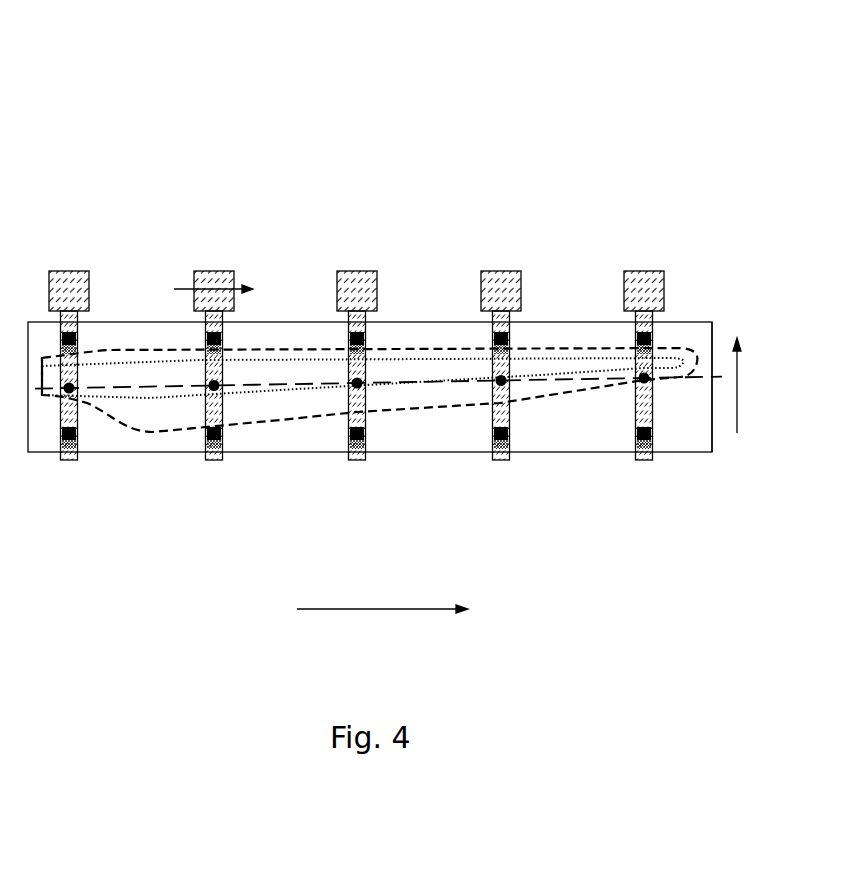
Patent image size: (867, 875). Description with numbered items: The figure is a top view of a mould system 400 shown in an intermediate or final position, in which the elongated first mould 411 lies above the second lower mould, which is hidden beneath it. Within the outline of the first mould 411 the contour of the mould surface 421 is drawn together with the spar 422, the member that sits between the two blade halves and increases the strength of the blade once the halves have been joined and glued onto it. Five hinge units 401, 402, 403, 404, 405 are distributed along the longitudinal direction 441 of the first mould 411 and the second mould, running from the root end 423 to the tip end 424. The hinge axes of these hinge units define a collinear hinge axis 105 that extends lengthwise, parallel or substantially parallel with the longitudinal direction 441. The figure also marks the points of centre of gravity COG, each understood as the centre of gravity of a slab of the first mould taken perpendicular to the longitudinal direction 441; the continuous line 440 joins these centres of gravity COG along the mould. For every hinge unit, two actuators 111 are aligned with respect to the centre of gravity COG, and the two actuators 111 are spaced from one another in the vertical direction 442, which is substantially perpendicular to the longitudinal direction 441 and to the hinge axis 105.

The mould system 400 is at (175, 56).
The hinge unit 401 is at (67, 270).
The hinge unit 402 is at (207, 270).
The hinge unit 403 is at (348, 267).
The hinge unit 404 is at (492, 265).
The hinge unit 405 is at (634, 265).
The hinge axis 105 is at (246, 283).
The actuators 111 is at (365, 343).
The first mould 411 is at (132, 453).
The mould surface 421 is at (450, 405).
The spar 422 is at (565, 373).
The root end 423 is at (40, 402).
The tip end 424 is at (689, 387).
The continuous line 440 is at (97, 387).
The longitudinal direction 441 is at (378, 611).
The vertical direction 442 is at (732, 342).
The centre of gravity COG is at (220, 388).